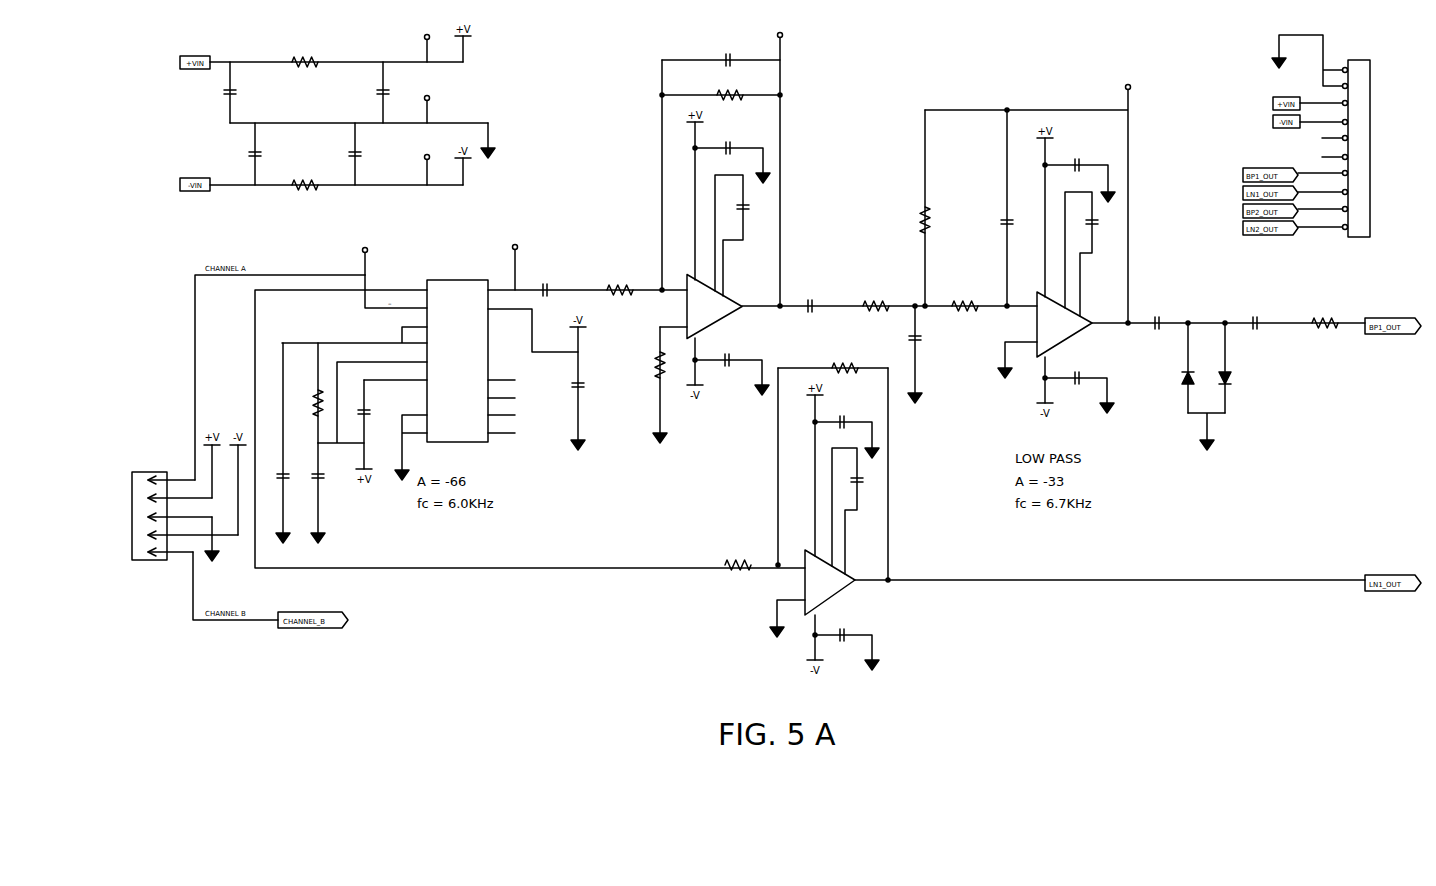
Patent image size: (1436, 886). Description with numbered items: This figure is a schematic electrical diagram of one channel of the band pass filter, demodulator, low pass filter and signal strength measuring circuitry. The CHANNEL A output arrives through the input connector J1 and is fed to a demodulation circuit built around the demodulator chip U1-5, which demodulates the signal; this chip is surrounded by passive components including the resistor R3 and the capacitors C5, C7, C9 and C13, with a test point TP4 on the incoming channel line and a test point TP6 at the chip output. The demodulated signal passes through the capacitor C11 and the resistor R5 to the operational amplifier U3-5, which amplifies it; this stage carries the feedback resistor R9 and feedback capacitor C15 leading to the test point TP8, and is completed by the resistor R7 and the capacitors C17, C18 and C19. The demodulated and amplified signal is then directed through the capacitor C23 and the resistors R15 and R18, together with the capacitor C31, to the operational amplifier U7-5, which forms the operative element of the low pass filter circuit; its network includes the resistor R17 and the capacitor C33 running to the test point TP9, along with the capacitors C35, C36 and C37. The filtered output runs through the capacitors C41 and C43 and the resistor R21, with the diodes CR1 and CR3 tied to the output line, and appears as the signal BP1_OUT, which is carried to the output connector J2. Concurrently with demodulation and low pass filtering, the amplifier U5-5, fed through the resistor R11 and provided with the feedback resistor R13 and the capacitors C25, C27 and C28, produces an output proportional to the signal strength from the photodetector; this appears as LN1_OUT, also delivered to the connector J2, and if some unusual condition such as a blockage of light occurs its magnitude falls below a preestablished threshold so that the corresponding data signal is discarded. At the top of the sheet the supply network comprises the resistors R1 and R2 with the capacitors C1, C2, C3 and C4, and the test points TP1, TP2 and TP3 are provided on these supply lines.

The resistor R1 is at (305, 55).
The resistor R2 is at (305, 178).
The resistor R3 is at (309, 393).
The resistor R5 is at (620, 283).
The resistor R7 is at (651, 380).
The resistor R9 is at (721, 88).
The resistor R11 is at (738, 558).
The resistor R13 is at (833, 361).
The resistor R15 is at (876, 299).
The resistor R17 is at (916, 208).
The resistor R18 is at (965, 299).
The resistor R21 is at (1325, 316).
The capacitor C1 is at (226, 92).
The capacitor C2 is at (251, 154).
The capacitor C3 is at (351, 154).
The capacitor C4 is at (379, 92).
The capacitor C5 is at (274, 438).
The capacitor C7 is at (309, 488).
The capacitor C9 is at (355, 424).
The capacitor C11 is at (545, 283).
The capacitor C13 is at (569, 383).
The capacitor C15 is at (721, 53).
The capacitor C17 is at (729, 151).
The capacitor C18 is at (732, 235).
The capacitor C19 is at (728, 363).
The capacitor C23 is at (810, 299).
The capacitor C25 is at (843, 425).
The capacitor C27 is at (843, 638).
The capacitor C28 is at (847, 511).
The capacitor C31 is at (906, 349).
The capacitor C33 is at (998, 208).
The capacitor C35 is at (1076, 169).
The capacitor C36 is at (1081, 254).
The capacitor C37 is at (1076, 381).
The capacitor C41 is at (1157, 316).
The capacitor C43 is at (1255, 316).
The demodulation chip U1-5 is at (464, 350).
The operational amplifier U3-5 is at (732, 307).
The amplifier U5-5 is at (847, 582).
The operational amplifier U7-5 is at (1080, 324).
The test point TP1 is at (427, 41).
The test point TP2 is at (427, 163).
The test point TP3 is at (427, 102).
The test point TP4 is at (365, 254).
The test point TP6 is at (515, 260).
The test point TP8 is at (780, 28).
The test point TP9 is at (1128, 80).
The input connector J1 is at (185, 506).
The output connector J2 is at (1351, 137).
The diode CR1 is at (1180, 368).
The diode CR3 is at (1217, 368).